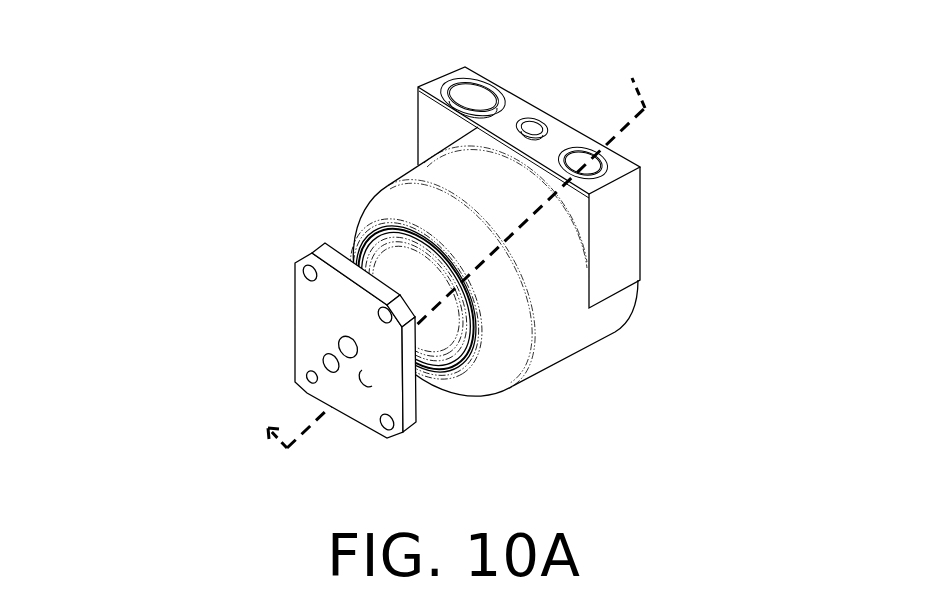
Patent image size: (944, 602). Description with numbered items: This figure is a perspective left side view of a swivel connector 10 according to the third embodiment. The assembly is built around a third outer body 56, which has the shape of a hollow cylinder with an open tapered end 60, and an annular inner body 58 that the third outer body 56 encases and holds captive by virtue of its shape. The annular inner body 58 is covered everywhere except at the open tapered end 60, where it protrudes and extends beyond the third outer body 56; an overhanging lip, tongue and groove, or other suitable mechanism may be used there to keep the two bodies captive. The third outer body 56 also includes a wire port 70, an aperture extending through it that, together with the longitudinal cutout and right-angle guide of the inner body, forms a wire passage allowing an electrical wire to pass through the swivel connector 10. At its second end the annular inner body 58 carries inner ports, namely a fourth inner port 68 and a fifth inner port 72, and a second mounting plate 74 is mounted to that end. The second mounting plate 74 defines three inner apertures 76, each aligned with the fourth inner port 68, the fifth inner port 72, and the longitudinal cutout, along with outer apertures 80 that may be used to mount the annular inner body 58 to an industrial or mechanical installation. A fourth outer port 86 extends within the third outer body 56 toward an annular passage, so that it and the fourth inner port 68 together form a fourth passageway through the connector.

The swivel connector 10 is at (457, 253).
The third outer body 56 is at (521, 208).
The annular inner body 58 is at (398, 282).
The open tapered end 60 is at (497, 360).
The fourth inner port 68 is at (370, 380).
The wire port 70 is at (528, 132).
The fifth inner port 72 is at (333, 367).
The second mounting plate 74 is at (394, 348).
The inner apertures 76 is at (328, 360).
The outer apertures 80 is at (308, 375).
The fourth outer port 86 is at (465, 100).